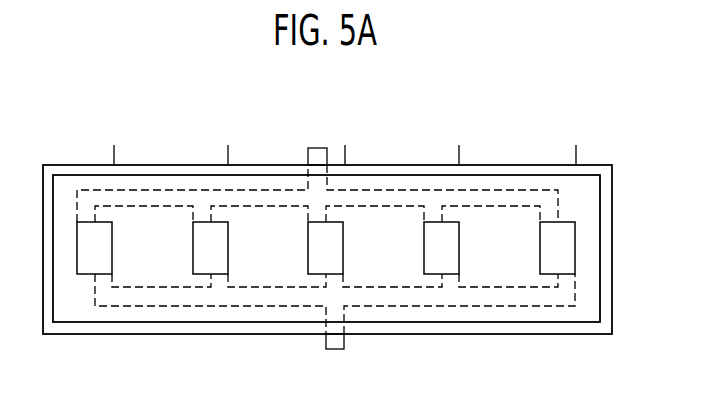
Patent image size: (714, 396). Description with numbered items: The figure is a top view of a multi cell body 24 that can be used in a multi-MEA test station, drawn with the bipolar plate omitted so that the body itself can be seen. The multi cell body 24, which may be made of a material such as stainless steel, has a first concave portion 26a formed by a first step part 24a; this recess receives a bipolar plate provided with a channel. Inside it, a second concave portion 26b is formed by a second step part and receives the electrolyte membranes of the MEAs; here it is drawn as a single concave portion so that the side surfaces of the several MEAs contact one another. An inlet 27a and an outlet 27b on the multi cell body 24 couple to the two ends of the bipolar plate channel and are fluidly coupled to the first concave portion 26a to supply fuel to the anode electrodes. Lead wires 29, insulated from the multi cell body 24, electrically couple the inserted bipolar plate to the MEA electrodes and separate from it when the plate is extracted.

The multi cell body 24 is at (80, 118).
The first step part 24a is at (575, 247).
The first concave portion 26a is at (565, 233).
The second concave portion 26b is at (587, 288).
The inlet 27a is at (344, 340).
The outlet 27b is at (318, 148).
The lead wire 29 is at (459, 155).